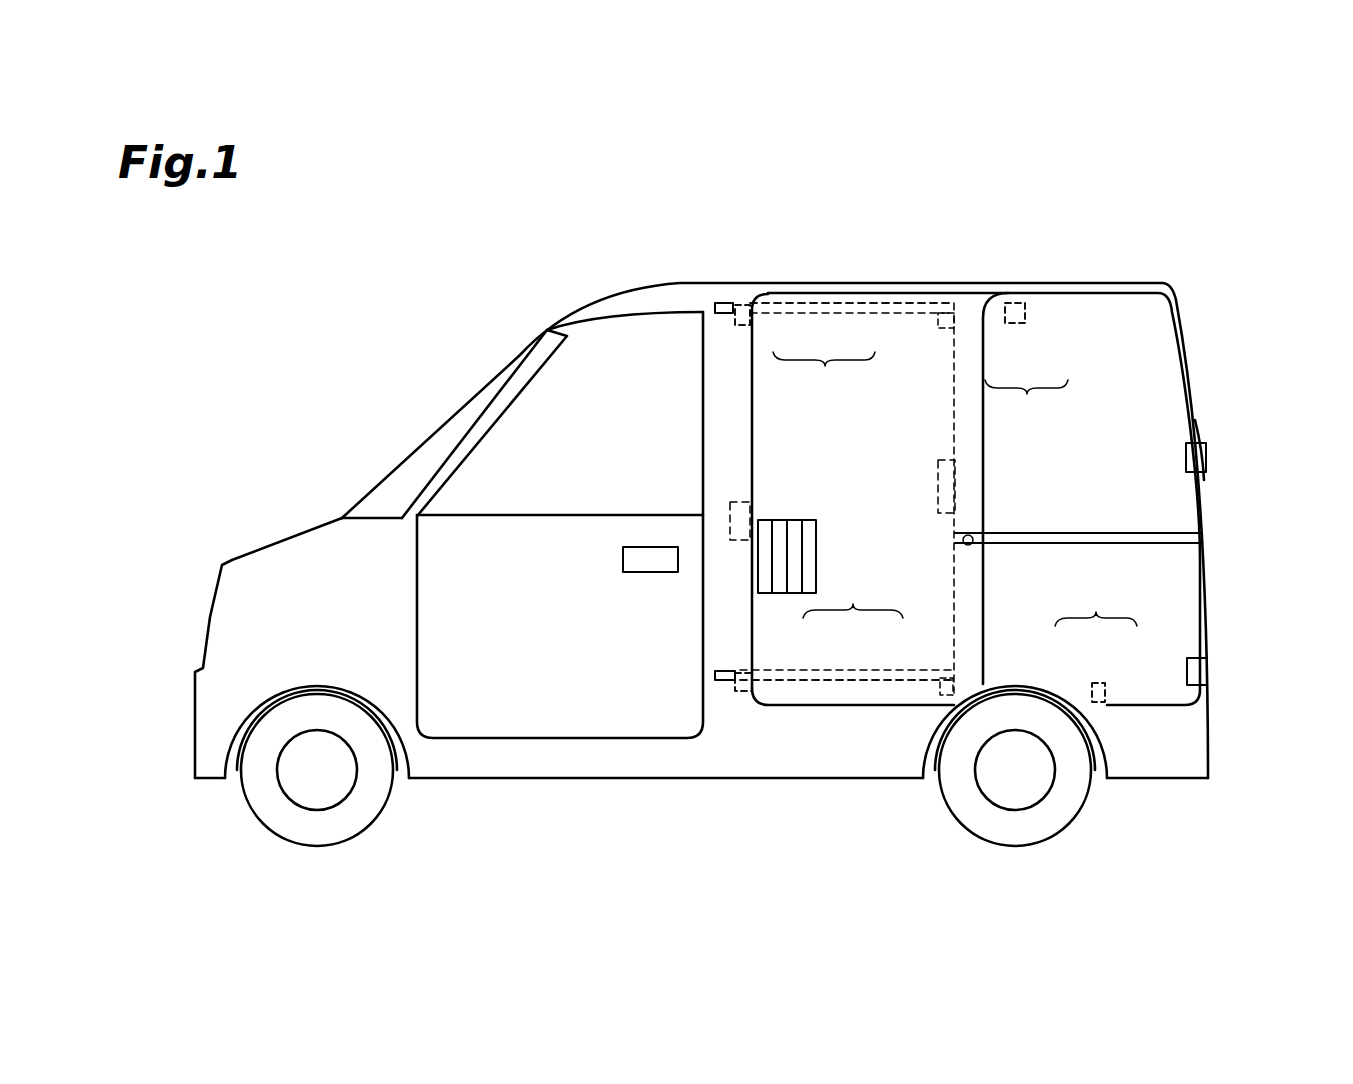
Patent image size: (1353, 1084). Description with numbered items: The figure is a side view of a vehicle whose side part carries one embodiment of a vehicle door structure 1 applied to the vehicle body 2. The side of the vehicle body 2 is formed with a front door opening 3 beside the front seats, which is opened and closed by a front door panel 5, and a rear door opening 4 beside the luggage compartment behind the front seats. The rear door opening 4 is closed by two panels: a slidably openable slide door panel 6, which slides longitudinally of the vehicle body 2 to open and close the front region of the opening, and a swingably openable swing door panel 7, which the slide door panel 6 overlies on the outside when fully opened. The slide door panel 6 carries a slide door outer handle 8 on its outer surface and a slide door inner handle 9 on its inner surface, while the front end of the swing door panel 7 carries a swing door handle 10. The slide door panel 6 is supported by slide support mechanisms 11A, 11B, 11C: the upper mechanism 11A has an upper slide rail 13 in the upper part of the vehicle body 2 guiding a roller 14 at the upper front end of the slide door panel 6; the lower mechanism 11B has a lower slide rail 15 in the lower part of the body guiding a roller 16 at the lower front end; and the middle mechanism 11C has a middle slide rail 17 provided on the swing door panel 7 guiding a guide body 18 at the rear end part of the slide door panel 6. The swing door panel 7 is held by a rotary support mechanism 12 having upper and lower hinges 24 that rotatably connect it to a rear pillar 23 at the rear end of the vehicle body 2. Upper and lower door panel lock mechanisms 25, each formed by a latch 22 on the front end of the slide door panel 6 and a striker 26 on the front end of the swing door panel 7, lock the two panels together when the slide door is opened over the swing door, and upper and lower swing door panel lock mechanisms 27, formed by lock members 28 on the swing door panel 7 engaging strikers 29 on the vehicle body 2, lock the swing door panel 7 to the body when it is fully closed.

The vehicle door structure 1 is at (1030, 287).
The vehicle body 2 is at (685, 295).
The front door opening 3 is at (645, 318).
The rear door opening 4 is at (1083, 294).
The front door panel 5 is at (548, 700).
The slide door panel 6 is at (850, 648).
The swing door panel 7 is at (1145, 597).
The slide door outer handle 8 is at (810, 553).
The slide door inner handle 9 is at (744, 500).
The swing door handle 10 is at (936, 470).
The slide support mechanism 11A is at (910, 297).
The slide support mechanism 11B is at (782, 689).
The slide support mechanism 11C is at (1043, 529).
The rotary support mechanism 12 is at (1210, 440).
The upper slide rail 13 is at (865, 303).
The roller 14 is at (740, 304).
The lower slide rail 15 is at (880, 677).
The roller 16 is at (745, 669).
The middle slide rail 17 is at (1080, 538).
The guide body 18 is at (972, 546).
The latch 22 is at (748, 326).
The rear pillar 23 is at (1183, 362).
The hinge 24 is at (1207, 458).
The door panel lock mechanism 25 is at (838, 485).
The striker 26 is at (940, 325).
The swing door panel lock mechanism 27 is at (1061, 503).
The lock member 28 is at (1008, 324).
The striker 29 is at (1026, 306).